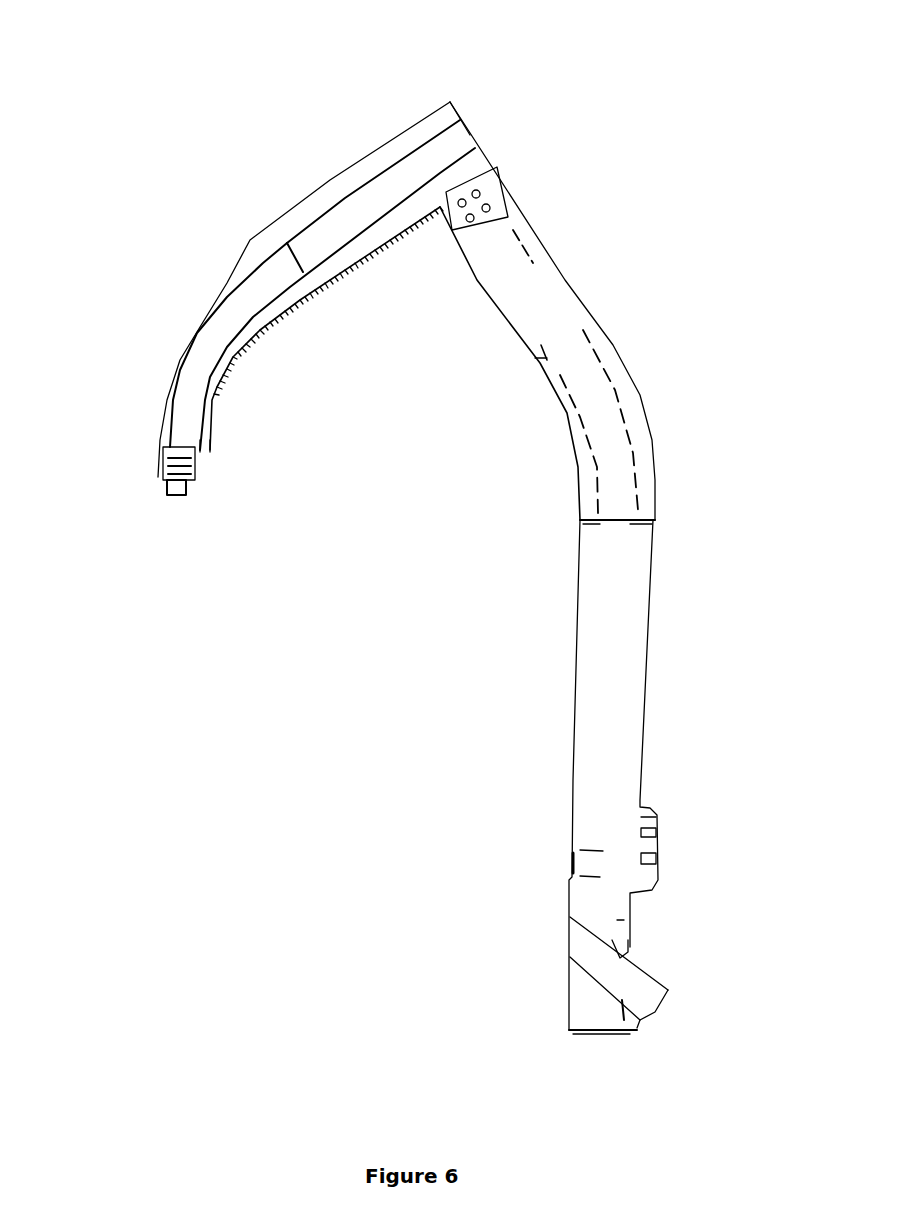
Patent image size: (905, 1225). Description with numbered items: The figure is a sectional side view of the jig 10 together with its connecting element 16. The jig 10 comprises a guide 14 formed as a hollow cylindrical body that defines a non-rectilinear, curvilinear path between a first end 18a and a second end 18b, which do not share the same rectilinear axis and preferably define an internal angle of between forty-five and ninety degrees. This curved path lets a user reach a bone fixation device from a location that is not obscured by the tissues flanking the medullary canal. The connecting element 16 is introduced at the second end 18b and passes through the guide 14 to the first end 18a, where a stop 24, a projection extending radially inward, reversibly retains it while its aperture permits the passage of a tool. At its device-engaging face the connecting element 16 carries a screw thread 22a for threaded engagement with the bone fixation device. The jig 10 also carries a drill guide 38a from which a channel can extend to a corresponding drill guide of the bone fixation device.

The jig 10 is at (632, 181).
The guide 14 is at (317, 233).
The connecting element 16 is at (172, 487).
The first end 18a is at (200, 483).
The second end 18b is at (453, 143).
The screw thread 22a is at (180, 497).
The stop 24 is at (163, 460).
The drill guide 38a is at (567, 928).